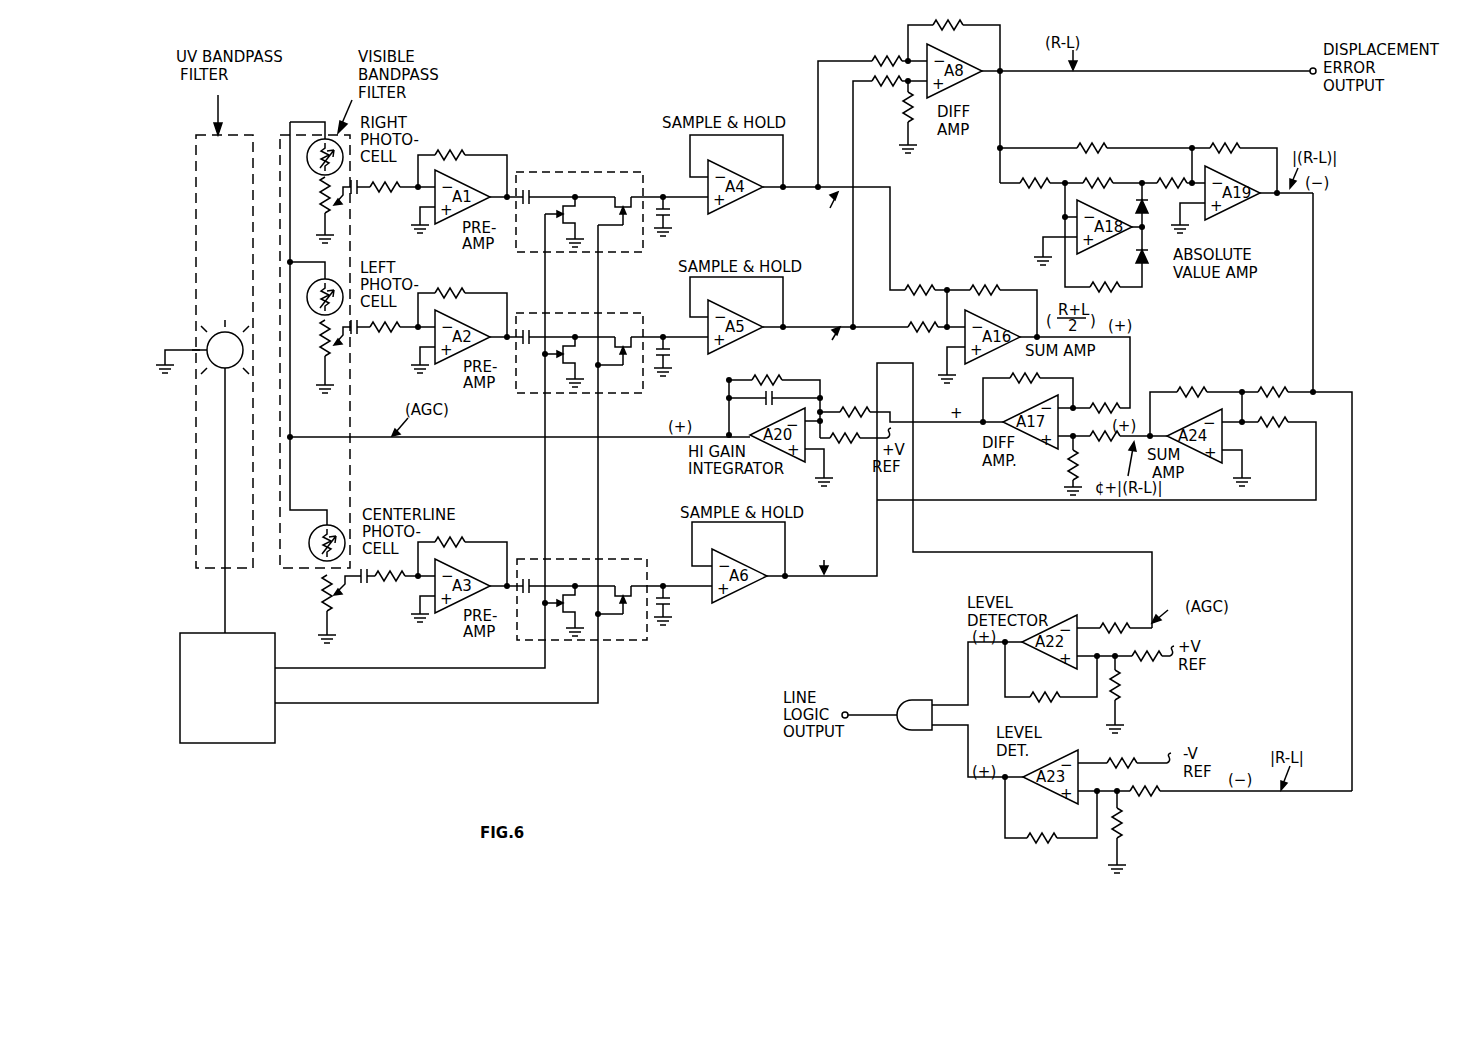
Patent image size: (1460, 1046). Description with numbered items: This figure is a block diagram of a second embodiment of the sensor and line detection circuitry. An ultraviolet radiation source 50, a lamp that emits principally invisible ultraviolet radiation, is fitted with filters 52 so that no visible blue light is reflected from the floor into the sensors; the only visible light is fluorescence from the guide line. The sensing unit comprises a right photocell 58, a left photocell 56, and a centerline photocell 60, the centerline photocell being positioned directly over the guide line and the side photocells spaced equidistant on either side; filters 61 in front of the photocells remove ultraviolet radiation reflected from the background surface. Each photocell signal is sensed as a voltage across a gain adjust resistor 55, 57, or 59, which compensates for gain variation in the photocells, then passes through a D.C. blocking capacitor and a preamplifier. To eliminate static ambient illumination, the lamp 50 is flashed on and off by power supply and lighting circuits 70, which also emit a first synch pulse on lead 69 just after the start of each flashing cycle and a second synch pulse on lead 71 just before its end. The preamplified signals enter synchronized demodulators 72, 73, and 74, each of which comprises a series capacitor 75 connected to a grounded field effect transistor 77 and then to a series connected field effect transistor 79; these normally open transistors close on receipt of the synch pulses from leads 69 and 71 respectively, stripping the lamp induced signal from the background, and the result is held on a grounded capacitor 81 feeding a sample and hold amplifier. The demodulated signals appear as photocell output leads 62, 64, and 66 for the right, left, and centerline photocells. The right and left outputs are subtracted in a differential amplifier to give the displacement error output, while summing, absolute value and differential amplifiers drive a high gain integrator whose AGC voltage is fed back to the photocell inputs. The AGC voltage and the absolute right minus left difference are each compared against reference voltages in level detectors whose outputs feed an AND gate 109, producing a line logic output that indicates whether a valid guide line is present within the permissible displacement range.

The radiation source 50 is at (205, 345).
The filters 52 is at (193, 138).
The gain adjust resistor 55 is at (318, 218).
The left photocell 56 is at (322, 315).
The gain adjust resistor 57 is at (323, 362).
The right photocell 58 is at (319, 175).
The gain adjust resistor 59 is at (317, 603).
The centerline photocell 60 is at (310, 568).
The filters 61 is at (277, 142).
The photocell output lead 62 is at (782, 190).
The photocell output lead 64 is at (857, 328).
The photocell output lead 66 is at (810, 576).
The lead 69 is at (485, 661).
The power supply and lighting circuits 70 is at (228, 745).
The lead 71 is at (490, 703).
The synchronized demodulator 72 is at (598, 217).
The synchronized demodulator 73 is at (526, 393).
The synchronized demodulator 74 is at (627, 641).
The series capacitor 75 is at (531, 194).
The grounded field effect transistor 77 is at (575, 218).
The series connected field effect transistor 79 is at (633, 226).
The grounded capacitor 81 is at (671, 222).
The AND gate 109 is at (895, 702).